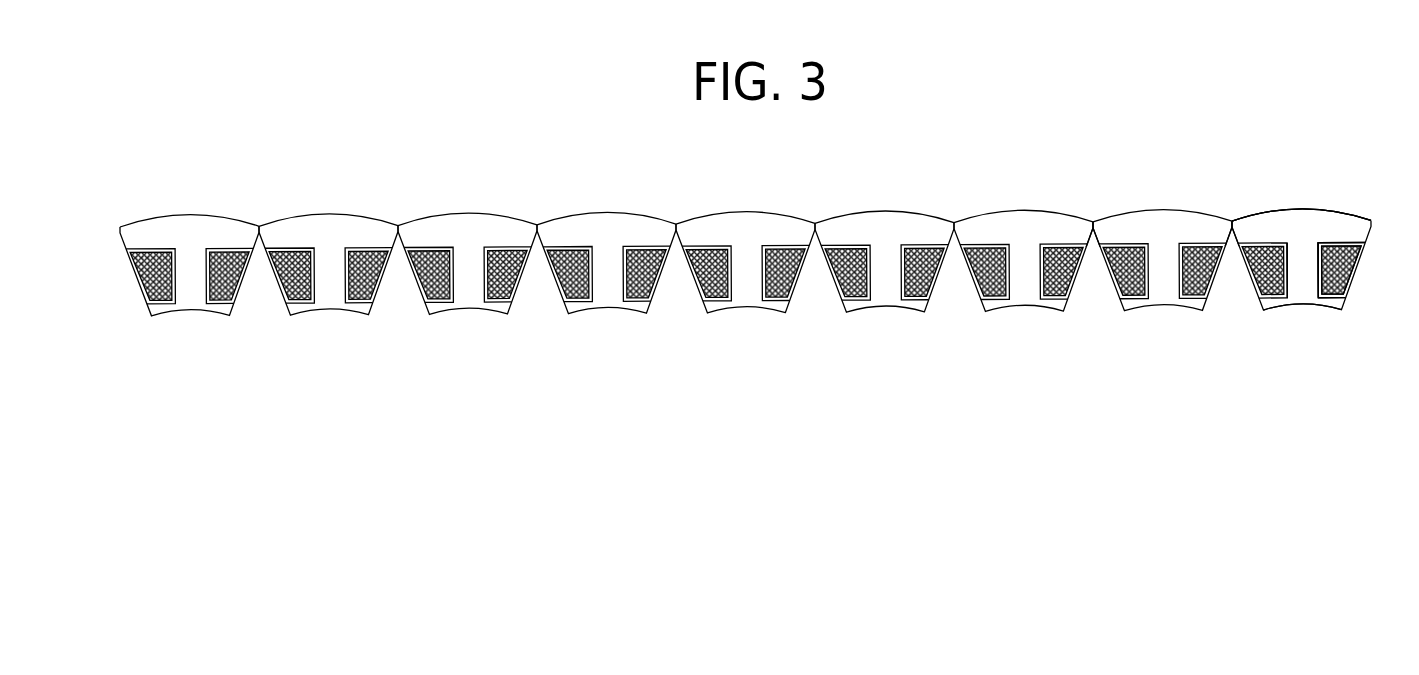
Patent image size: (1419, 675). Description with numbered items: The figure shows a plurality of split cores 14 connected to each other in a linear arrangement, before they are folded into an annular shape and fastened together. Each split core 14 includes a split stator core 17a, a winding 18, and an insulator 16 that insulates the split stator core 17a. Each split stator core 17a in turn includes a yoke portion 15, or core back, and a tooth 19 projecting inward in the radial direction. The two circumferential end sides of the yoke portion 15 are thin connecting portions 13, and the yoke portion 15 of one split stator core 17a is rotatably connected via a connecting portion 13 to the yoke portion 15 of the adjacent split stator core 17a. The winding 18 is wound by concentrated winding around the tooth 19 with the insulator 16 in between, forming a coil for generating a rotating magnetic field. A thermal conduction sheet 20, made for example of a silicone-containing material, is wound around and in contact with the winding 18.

The connecting portion 13 is at (1094, 223).
The split core 14 is at (1093, 325).
The yoke portion 15 is at (1322, 226).
The insulator 16 is at (1338, 302).
The split stator core 17a is at (1278, 142).
The winding 18 is at (1366, 253).
The tooth 19 is at (1303, 273).
The thermal conduction sheet 20 is at (1360, 272).